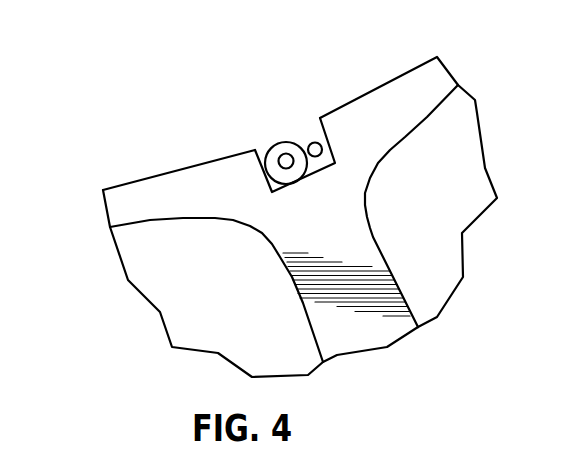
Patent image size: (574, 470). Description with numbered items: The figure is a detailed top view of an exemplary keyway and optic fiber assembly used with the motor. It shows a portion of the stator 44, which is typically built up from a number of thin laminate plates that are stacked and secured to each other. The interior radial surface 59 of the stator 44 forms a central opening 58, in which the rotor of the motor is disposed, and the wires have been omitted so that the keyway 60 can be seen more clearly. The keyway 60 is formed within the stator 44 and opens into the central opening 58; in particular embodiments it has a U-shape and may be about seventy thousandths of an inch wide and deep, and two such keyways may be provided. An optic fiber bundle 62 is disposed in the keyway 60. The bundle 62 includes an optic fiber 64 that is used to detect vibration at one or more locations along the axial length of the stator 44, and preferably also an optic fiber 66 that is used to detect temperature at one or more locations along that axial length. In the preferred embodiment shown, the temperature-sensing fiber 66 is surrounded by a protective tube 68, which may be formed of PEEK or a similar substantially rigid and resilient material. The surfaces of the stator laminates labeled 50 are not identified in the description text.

The stator 44 is at (267, 200).
The side surfaces 50 is at (233, 309).
The central opening 58 is at (163, 138).
The interior radial surface 59 is at (407, 72).
The keyway 60 is at (274, 117).
The optic fiber bundle 62 is at (249, 113).
The optic fiber 64 is at (314, 143).
The optic fiber 66 is at (285, 154).
The protective tube 68 is at (273, 147).